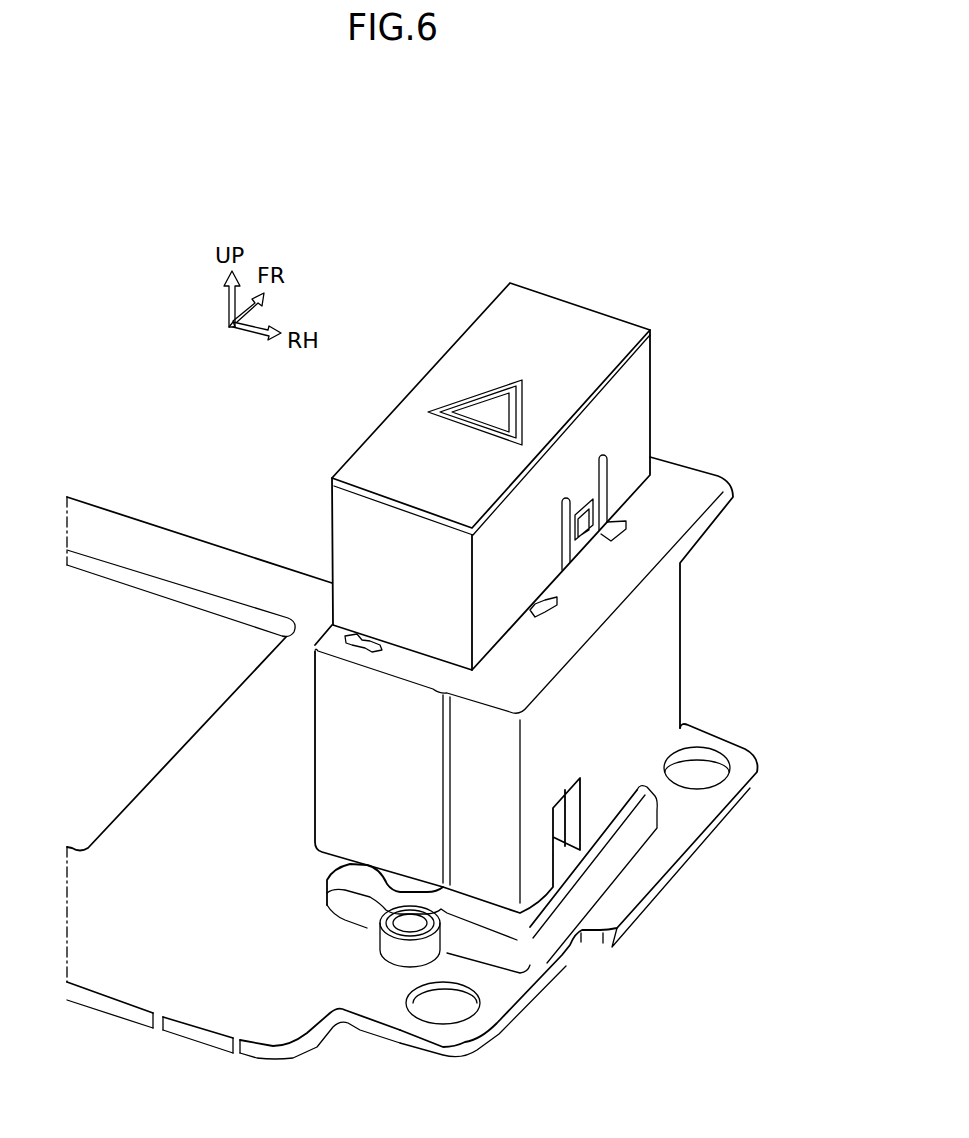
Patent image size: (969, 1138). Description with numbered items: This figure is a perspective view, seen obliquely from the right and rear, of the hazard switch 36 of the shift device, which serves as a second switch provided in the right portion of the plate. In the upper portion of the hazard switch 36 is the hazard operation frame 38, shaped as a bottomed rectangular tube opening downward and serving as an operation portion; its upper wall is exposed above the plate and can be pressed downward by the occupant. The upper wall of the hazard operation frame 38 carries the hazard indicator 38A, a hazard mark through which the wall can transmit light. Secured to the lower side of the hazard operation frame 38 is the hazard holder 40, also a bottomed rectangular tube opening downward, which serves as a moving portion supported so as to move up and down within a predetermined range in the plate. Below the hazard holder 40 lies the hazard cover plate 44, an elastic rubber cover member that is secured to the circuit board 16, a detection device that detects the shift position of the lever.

The circuit board 16 is at (173, 532).
The hazard switch 36 is at (535, 565).
The hazard operation frame 38 is at (516, 473).
The hazard indicator 38A is at (508, 382).
The hazard holder 40 is at (680, 610).
The hazard cover plate 44 is at (620, 857).